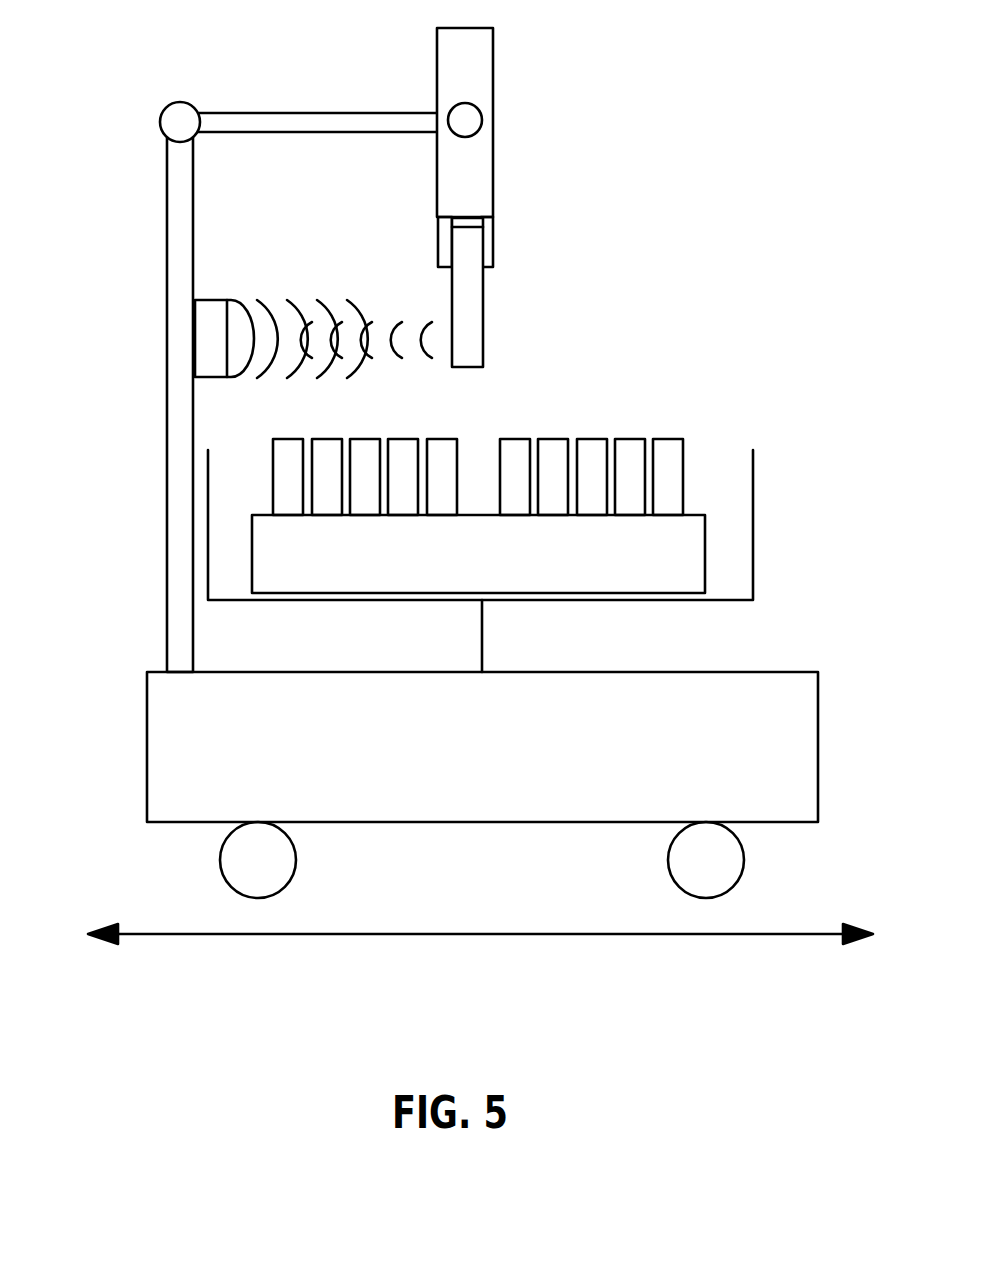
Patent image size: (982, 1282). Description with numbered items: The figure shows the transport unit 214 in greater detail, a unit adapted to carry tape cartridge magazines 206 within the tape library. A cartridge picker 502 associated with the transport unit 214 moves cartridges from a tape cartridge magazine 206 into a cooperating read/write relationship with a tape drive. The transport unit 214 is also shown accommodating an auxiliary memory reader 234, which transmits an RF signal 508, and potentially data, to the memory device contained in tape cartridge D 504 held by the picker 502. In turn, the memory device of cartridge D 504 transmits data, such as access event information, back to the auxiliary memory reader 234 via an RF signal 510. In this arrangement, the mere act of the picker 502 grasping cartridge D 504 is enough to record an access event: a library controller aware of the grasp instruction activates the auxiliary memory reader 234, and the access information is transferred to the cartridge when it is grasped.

The tape cartridge magazine 206 is at (692, 512).
The transport unit 214 is at (145, 757).
The auxiliary memory reader 234 is at (208, 299).
The cartridge picker 502 is at (495, 48).
The tape cartridge D 504 is at (483, 350).
The RF signal 508 is at (267, 293).
The RF signal 510 is at (415, 313).